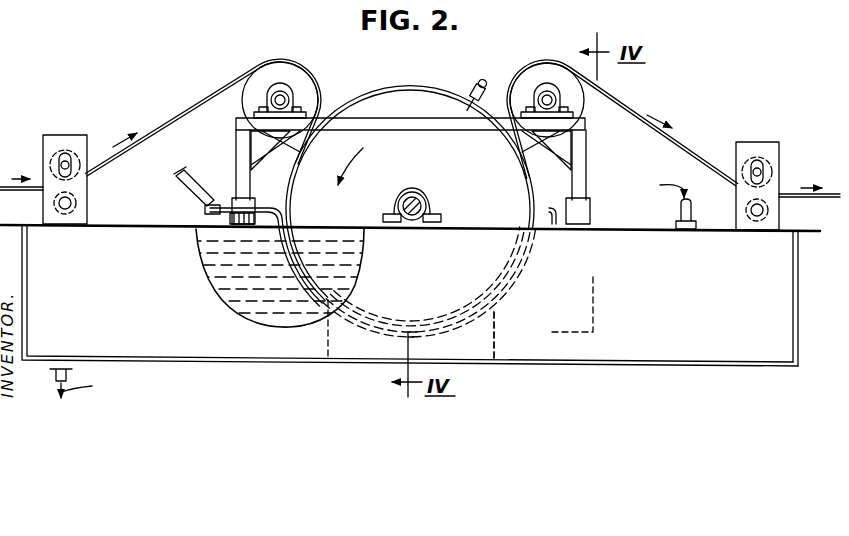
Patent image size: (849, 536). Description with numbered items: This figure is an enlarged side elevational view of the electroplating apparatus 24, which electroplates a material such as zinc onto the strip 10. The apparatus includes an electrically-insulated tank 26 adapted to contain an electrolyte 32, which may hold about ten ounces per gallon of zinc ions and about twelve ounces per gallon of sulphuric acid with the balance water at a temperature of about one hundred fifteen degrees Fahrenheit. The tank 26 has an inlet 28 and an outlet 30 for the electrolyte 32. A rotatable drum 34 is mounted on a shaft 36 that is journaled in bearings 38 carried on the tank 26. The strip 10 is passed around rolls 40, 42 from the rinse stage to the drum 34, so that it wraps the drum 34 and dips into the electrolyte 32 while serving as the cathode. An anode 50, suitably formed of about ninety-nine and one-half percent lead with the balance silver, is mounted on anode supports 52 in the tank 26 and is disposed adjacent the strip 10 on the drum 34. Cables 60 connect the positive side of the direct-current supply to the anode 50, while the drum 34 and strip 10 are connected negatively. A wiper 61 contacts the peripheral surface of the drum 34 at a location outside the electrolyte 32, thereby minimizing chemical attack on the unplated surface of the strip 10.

The strip 10 is at (174, 118).
The electroplating apparatus 24 is at (303, 366).
The electrically-insulated tank 26 is at (616, 368).
The inlet 28 is at (679, 216).
The outlet 30 is at (55, 377).
The electrolyte 32 is at (214, 291).
The drum 34 is at (498, 181).
The shaft 36 is at (401, 198).
The bearings 38 is at (425, 195).
The roll 40 is at (50, 158).
The roll 42 is at (259, 76).
The anode 50 is at (290, 290).
The anode supports 52 is at (497, 345).
The cables 60 is at (207, 179).
The wiper 61 is at (468, 90).